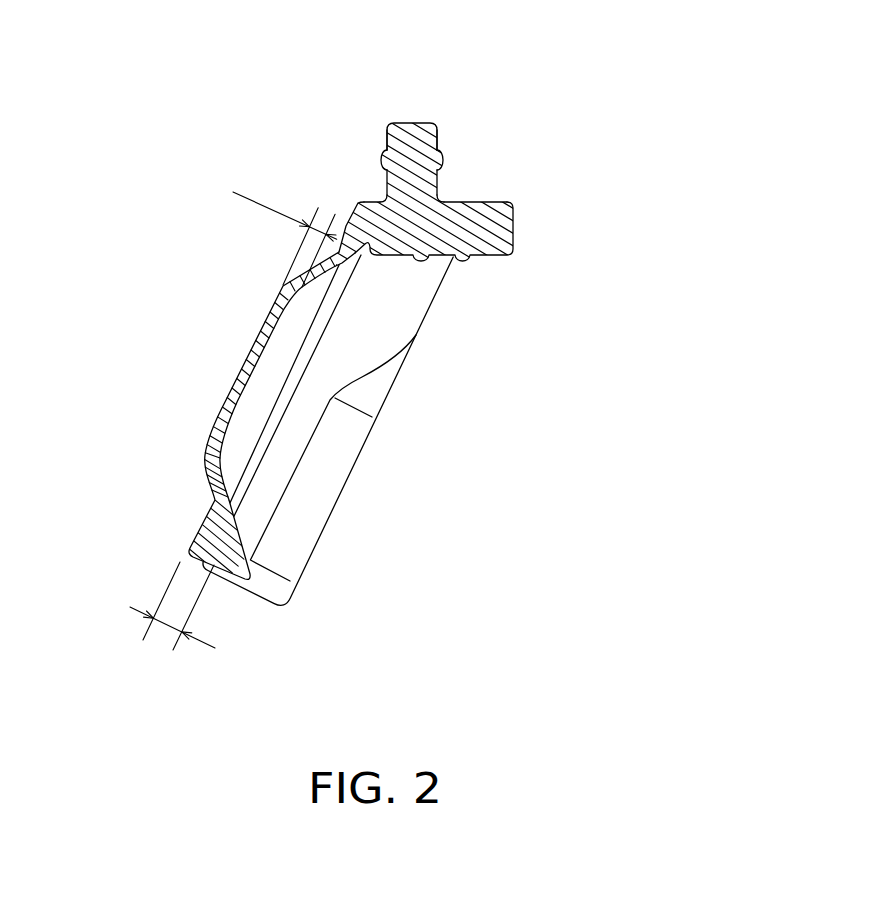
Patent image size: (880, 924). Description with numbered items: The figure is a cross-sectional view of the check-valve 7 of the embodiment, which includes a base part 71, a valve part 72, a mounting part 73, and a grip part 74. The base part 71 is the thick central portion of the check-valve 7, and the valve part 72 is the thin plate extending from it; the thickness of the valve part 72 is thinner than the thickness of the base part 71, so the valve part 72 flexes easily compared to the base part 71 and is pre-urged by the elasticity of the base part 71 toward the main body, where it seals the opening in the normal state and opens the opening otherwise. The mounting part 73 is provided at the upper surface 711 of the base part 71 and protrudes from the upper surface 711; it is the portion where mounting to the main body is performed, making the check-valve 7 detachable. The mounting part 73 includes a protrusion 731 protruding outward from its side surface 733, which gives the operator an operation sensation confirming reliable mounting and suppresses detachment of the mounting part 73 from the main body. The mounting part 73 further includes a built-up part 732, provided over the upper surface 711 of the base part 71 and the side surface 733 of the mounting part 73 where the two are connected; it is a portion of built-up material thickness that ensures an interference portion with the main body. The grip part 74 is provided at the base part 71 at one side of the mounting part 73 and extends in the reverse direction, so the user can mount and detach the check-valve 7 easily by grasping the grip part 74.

The check-valve 7 is at (580, 117).
The base part 71 is at (497, 228).
The upper surface 711 is at (488, 200).
The valve part 72 is at (246, 357).
The mounting part 73 is at (408, 133).
The protrusion 731 is at (380, 163).
The built-up part 732 is at (381, 191).
The side surface 733 is at (386, 141).
The grip part 74 is at (322, 478).